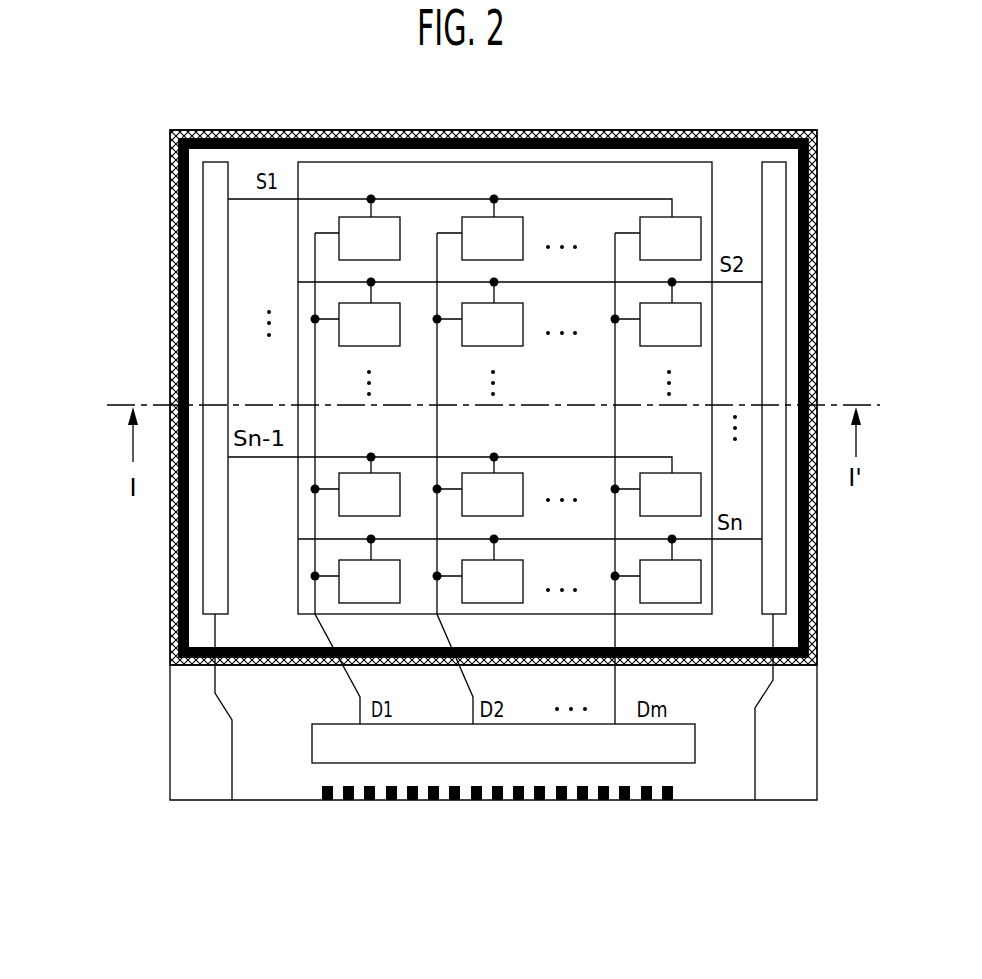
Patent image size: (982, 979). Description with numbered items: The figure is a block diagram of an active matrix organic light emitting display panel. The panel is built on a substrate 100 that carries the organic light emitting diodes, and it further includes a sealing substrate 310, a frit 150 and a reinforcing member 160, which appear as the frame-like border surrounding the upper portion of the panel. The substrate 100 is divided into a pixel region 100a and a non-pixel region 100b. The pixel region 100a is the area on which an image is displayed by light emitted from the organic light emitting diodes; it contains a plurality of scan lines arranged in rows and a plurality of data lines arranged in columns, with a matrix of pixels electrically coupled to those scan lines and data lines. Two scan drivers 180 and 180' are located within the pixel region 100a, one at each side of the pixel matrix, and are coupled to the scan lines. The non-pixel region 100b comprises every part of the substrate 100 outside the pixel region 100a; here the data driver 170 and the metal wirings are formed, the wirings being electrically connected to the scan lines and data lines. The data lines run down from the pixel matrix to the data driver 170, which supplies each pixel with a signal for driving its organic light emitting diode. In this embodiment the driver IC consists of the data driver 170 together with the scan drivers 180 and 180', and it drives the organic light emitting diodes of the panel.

The substrate 100 is at (68, 652).
The pixel region 100a is at (198, 622).
The non-pixel region 100b is at (192, 743).
The frit 150 is at (817, 622).
The reinforcing member 160 is at (817, 563).
The data driver 170 is at (695, 742).
The scan driver 180 is at (161, 481).
The scan driver 180' is at (826, 481).
The sealing substrate 310 is at (784, 665).